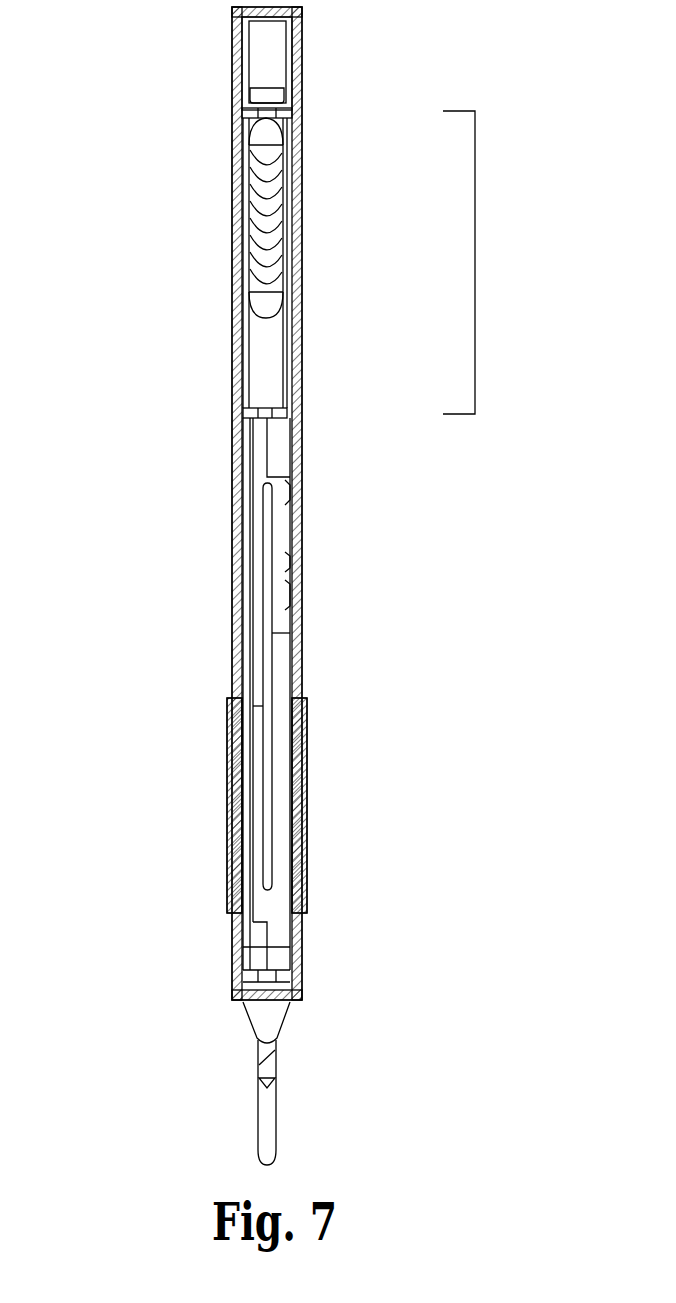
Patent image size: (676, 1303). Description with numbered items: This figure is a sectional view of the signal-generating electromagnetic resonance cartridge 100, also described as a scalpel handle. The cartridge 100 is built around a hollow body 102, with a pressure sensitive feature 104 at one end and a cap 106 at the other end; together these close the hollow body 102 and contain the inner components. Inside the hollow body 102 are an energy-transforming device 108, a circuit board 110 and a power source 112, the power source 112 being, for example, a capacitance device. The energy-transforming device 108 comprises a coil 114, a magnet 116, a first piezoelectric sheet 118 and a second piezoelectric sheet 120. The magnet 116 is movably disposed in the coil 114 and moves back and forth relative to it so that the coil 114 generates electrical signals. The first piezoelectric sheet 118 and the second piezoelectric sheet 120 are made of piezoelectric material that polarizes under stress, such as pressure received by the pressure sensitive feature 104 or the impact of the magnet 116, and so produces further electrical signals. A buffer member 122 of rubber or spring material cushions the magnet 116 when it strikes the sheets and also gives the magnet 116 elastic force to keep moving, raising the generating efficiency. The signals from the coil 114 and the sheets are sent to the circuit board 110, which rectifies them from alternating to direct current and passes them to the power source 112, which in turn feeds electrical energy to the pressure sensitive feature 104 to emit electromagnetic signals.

The electromagnetic resonance cartridge 100 is at (212, 262).
The hollow body 102 is at (258, 447).
The pressure sensitive feature 104 is at (282, 1020).
The cap 106 is at (326, 63).
The energy-transforming device 108 is at (501, 262).
The circuit board 110 is at (268, 664).
The power source 112 is at (260, 49).
The coil 114 is at (302, 255).
The magnet 116 is at (302, 208).
The first piezoelectric sheet 118 is at (302, 425).
The second piezoelectric sheet 120 is at (302, 120).
The buffer member 122 is at (302, 138).